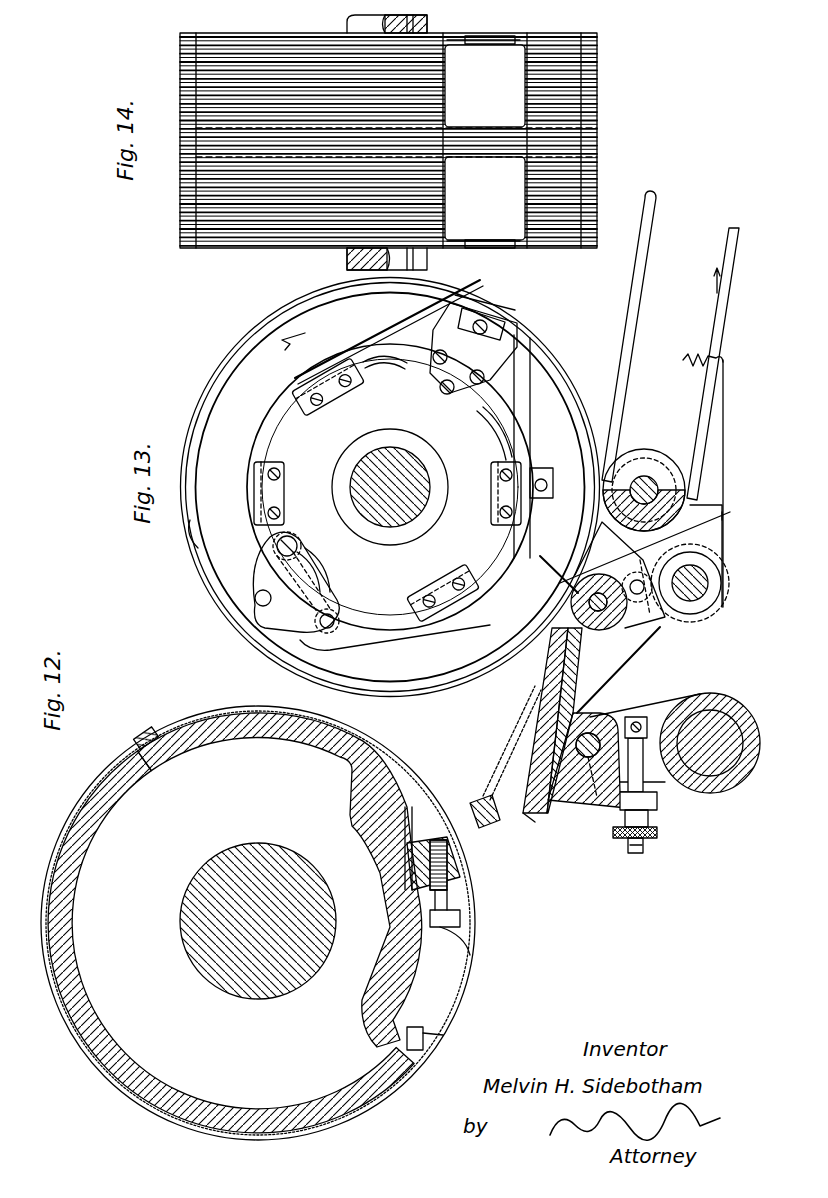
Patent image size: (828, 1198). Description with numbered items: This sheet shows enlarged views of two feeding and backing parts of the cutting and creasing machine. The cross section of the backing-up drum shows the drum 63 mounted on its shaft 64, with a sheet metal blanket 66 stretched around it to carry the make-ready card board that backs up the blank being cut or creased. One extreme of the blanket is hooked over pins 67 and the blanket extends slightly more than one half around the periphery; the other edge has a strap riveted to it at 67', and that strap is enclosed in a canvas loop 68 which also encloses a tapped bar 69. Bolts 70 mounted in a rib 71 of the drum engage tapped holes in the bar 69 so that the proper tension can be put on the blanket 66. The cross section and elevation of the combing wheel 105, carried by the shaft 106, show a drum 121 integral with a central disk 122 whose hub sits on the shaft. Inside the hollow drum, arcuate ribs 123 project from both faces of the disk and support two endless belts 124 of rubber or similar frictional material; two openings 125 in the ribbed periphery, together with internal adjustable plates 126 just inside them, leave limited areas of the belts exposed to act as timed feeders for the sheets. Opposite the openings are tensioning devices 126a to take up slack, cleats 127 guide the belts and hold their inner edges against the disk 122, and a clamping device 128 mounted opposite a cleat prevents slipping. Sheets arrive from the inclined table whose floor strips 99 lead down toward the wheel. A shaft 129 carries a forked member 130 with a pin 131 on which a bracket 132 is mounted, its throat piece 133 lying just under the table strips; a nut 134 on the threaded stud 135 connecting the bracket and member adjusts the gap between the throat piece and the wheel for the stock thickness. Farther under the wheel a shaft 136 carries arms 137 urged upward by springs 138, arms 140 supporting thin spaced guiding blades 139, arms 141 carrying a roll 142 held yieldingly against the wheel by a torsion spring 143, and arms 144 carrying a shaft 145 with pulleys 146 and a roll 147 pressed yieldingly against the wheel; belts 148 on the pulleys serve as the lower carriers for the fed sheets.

In FIG. 12, the drum 63 is at (199, 1103).
In FIG. 12, the shaft 64 is at (192, 896).
In FIG. 12, the sheet metal blanket 66 is at (160, 1105).
In FIG. 12, the pins 67 is at (438, 1034).
In FIG. 12, the rivets 67' is at (139, 717).
In FIG. 12, the canvas loop 68 is at (258, 705).
In FIG. 12, the tapped bar 69 is at (460, 857).
In FIG. 12, the bolts 70 is at (467, 947).
In FIG. 12, the rib 71 is at (462, 903).
In FIG. 13, the floor strips 99 is at (472, 805).
In FIG. 14, the combing wheel 105 is at (180, 222).
In FIG. 13, the combing wheel 105 is at (193, 409).
In FIG. 14, the shaft 106 is at (345, 262).
In FIG. 13, the shaft 106 is at (390, 460).
In FIG. 14, the drum 121 is at (192, 250).
In FIG. 13, the drum 121 is at (200, 545).
In FIG. 14, the disk 122 is at (215, 128).
In FIG. 13, the disk 122 is at (396, 465).
In FIG. 13, the arcuate ribs 123 is at (288, 430).
In FIG. 14, the endless belts 124 is at (485, 140).
In FIG. 13, the endless belts 124 is at (363, 360).
In FIG. 14, the openings 125 is at (447, 107).
In FIG. 13, the openings 125 is at (533, 338).
In FIG. 14, the adjustable plates 126 is at (517, 40).
In FIG. 13, the adjustable plates 126 is at (527, 313).
In FIG. 13, the tensioning devices 126a is at (337, 560).
In FIG. 13, the cleats 127 is at (279, 493).
In FIG. 13, the clamping device 128 is at (548, 478).
In FIG. 13, the shaft 129 is at (723, 720).
In FIG. 13, the forked member 130 is at (663, 707).
In FIG. 13, the pin 131 is at (596, 716).
In FIG. 13, the bracket 132 is at (577, 803).
In FIG. 13, the throat piece 133 is at (540, 820).
In FIG. 13, the nut 134 is at (657, 832).
In FIG. 13, the threaded stud 135 is at (637, 852).
In FIG. 13, the shaft 136 is at (703, 597).
In FIG. 13, the arms 137 is at (717, 447).
In FIG. 13, the springs 138 is at (680, 356).
In FIG. 13, the guiding blades 139 is at (600, 657).
In FIG. 13, the arms 140 is at (643, 620).
In FIG. 13, the arms 141 is at (657, 620).
In FIG. 13, the roll 142 is at (573, 588).
In FIG. 13, the torsion spring 143 is at (717, 548).
In FIG. 13, the arms 144 is at (717, 512).
In FIG. 13, the shaft 145 is at (650, 475).
In FIG. 13, the pulleys 146 is at (634, 450).
In FIG. 13, the roll 147 is at (678, 457).
In FIG. 13, the belts 148 is at (627, 341).